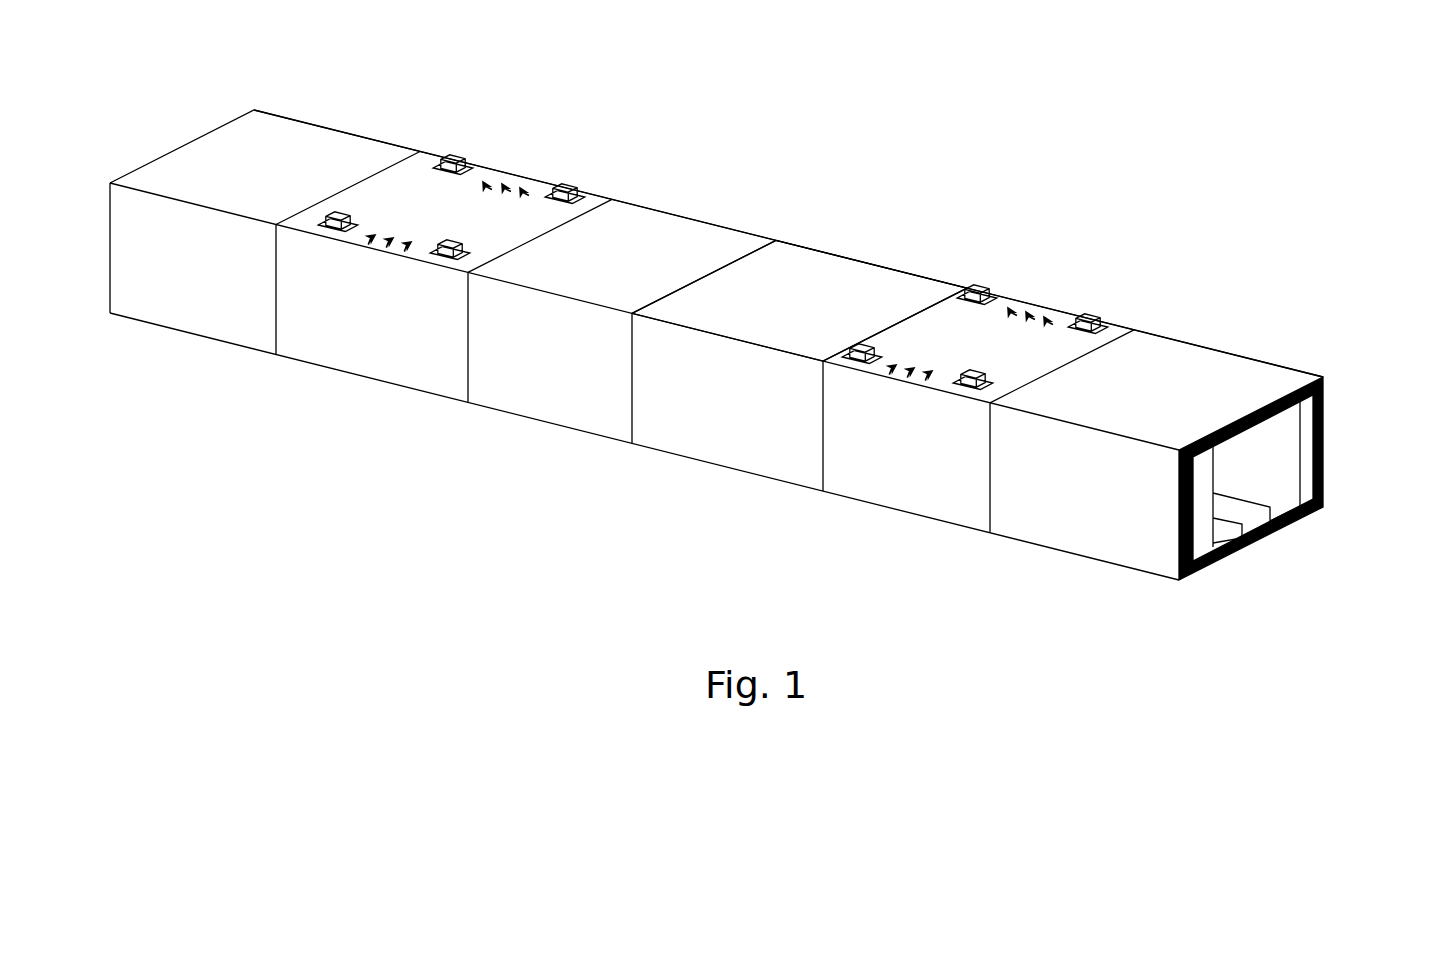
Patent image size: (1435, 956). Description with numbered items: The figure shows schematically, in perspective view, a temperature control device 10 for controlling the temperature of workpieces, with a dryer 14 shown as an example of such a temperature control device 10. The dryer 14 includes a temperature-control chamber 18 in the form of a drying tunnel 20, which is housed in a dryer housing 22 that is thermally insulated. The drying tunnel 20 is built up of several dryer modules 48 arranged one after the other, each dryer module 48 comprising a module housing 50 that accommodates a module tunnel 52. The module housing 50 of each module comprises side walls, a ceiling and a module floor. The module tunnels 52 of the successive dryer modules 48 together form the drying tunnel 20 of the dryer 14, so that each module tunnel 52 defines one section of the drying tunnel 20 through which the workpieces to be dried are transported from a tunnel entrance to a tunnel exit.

The temperature control device 10 is at (806, 118).
The dryer 14 is at (840, 186).
The temperature-control chamber 18 is at (1290, 450).
The drying tunnel 20 is at (1282, 483).
The dryer housing 22 is at (634, 228).
The dryer module 48 is at (198, 302).
The module housing 50 is at (174, 172).
The module tunnel 52 is at (1252, 457).